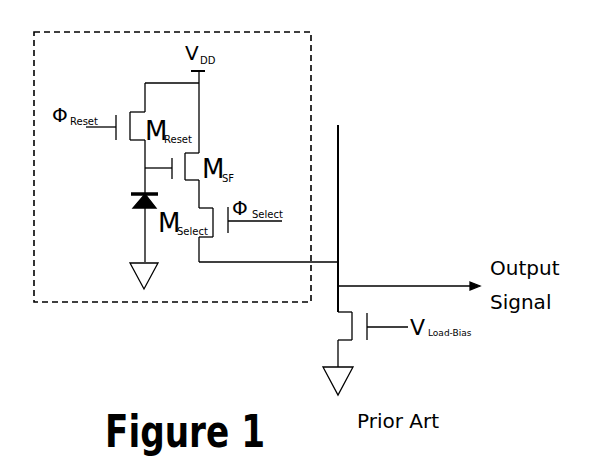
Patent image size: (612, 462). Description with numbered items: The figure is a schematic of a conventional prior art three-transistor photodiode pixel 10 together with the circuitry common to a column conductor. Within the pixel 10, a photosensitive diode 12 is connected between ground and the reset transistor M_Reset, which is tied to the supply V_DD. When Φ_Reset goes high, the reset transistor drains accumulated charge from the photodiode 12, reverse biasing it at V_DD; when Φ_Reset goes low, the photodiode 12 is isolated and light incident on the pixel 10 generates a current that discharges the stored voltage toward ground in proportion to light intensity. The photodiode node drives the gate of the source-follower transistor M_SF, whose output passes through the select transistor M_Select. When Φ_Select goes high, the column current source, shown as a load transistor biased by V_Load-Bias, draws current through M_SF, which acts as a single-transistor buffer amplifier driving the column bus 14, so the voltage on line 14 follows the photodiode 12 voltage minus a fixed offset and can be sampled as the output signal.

The photodiode pixel 10 is at (116, 303).
The photosensitive diode 12 is at (125, 200).
The column bus 14 is at (339, 141).